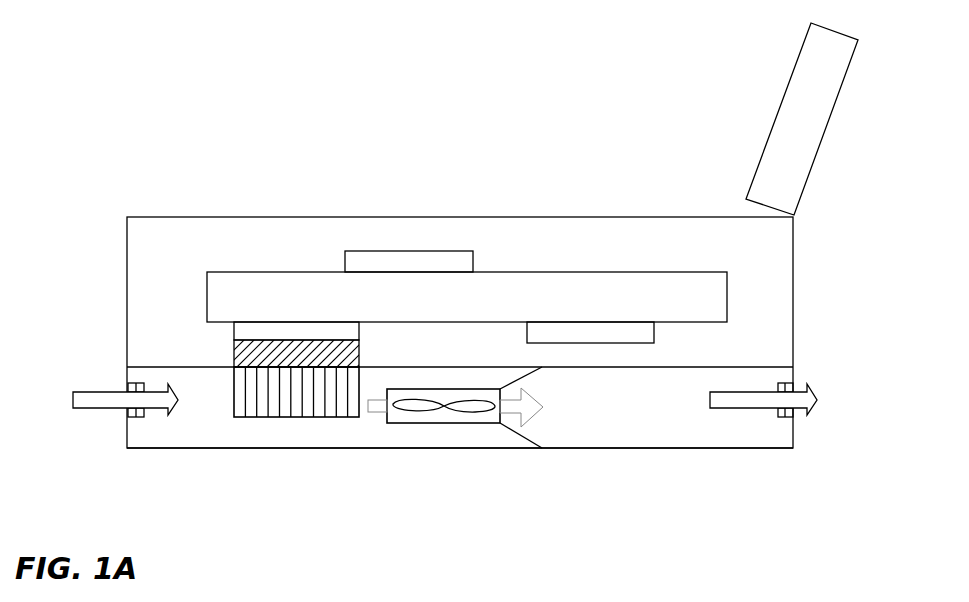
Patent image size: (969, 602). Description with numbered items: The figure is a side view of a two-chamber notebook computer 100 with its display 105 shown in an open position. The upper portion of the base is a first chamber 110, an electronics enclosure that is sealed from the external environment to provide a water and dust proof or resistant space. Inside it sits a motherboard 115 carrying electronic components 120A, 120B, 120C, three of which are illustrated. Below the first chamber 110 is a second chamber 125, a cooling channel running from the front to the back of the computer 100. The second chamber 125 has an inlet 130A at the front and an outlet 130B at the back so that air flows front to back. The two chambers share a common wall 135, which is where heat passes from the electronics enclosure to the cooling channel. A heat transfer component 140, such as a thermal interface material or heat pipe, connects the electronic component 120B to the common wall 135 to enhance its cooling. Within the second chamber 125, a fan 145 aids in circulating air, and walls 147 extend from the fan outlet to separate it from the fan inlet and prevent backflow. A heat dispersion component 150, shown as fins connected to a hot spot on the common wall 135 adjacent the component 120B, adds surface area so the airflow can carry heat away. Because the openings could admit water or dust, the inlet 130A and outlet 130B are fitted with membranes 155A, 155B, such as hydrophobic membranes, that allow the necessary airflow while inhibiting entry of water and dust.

The two-chamber notebook computer 100 is at (96, 174).
The display 105 is at (777, 117).
The first chamber 110 is at (127, 296).
The motherboard 115 is at (207, 300).
The electronic component 120A is at (345, 263).
The electronic component 120B is at (359, 322).
The electronic component 120C is at (654, 330).
The second chamber 125 is at (462, 448).
The inlet 130A is at (123, 405).
The outlet 130B is at (795, 408).
The common wall 135 is at (492, 367).
The heat transfer component 140 is at (234, 358).
The fan 145 is at (437, 423).
The walls 147 is at (532, 438).
The heat dispersion component 150 is at (298, 417).
The membrane 155A is at (145, 408).
The membrane 155B is at (778, 408).